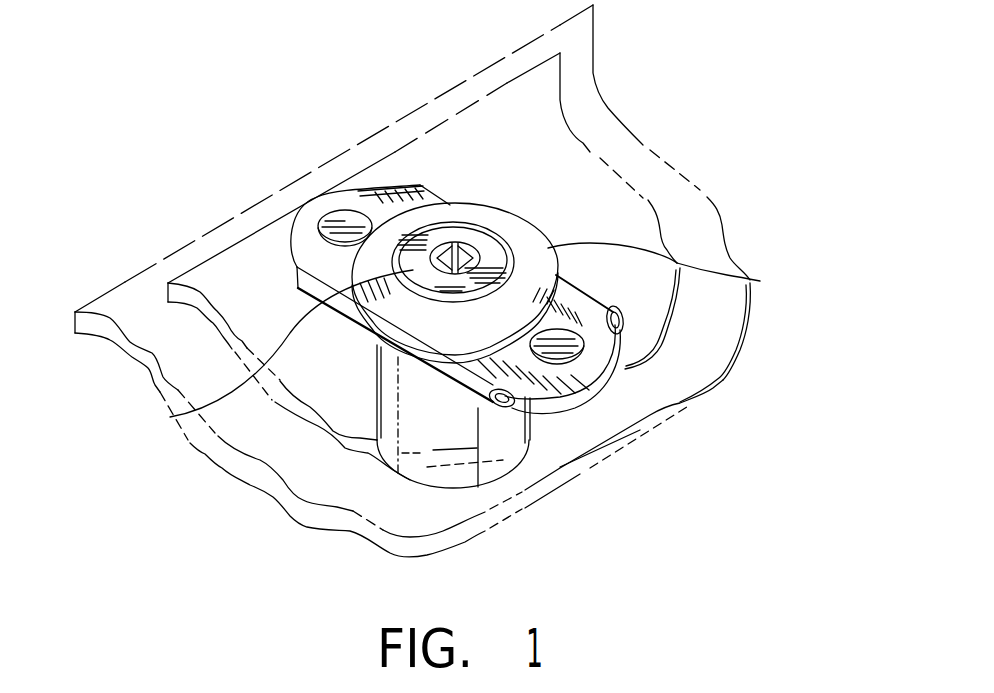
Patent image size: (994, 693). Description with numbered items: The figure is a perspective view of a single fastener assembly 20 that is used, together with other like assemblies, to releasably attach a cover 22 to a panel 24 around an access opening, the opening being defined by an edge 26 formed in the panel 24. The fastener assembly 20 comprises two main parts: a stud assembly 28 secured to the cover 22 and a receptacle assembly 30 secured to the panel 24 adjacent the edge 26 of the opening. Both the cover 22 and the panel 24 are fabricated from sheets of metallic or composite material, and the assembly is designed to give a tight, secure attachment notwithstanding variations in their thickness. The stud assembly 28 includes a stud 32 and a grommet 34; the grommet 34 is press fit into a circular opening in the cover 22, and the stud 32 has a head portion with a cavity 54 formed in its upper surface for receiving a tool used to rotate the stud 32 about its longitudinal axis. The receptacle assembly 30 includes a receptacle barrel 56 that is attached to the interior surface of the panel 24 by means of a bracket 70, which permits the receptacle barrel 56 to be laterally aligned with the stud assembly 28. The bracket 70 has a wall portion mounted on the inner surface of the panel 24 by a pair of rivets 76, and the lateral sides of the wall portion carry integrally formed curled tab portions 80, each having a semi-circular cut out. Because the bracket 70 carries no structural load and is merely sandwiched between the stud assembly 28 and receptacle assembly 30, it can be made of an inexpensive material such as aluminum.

The fastener assembly 20 is at (513, 212).
The cover 22 is at (207, 286).
The panel 24 is at (205, 435).
The edge 26 is at (710, 386).
The stud assembly 28 is at (503, 258).
The receptacle assembly 30 is at (427, 486).
The stud 32 is at (170, 417).
The grommet 34 is at (760, 281).
The cavity 54 is at (458, 248).
The receptacle barrel 56 is at (377, 398).
The bracket 70 is at (402, 188).
The rivets 76 is at (345, 226).
The curled tab portion 80 is at (617, 322).